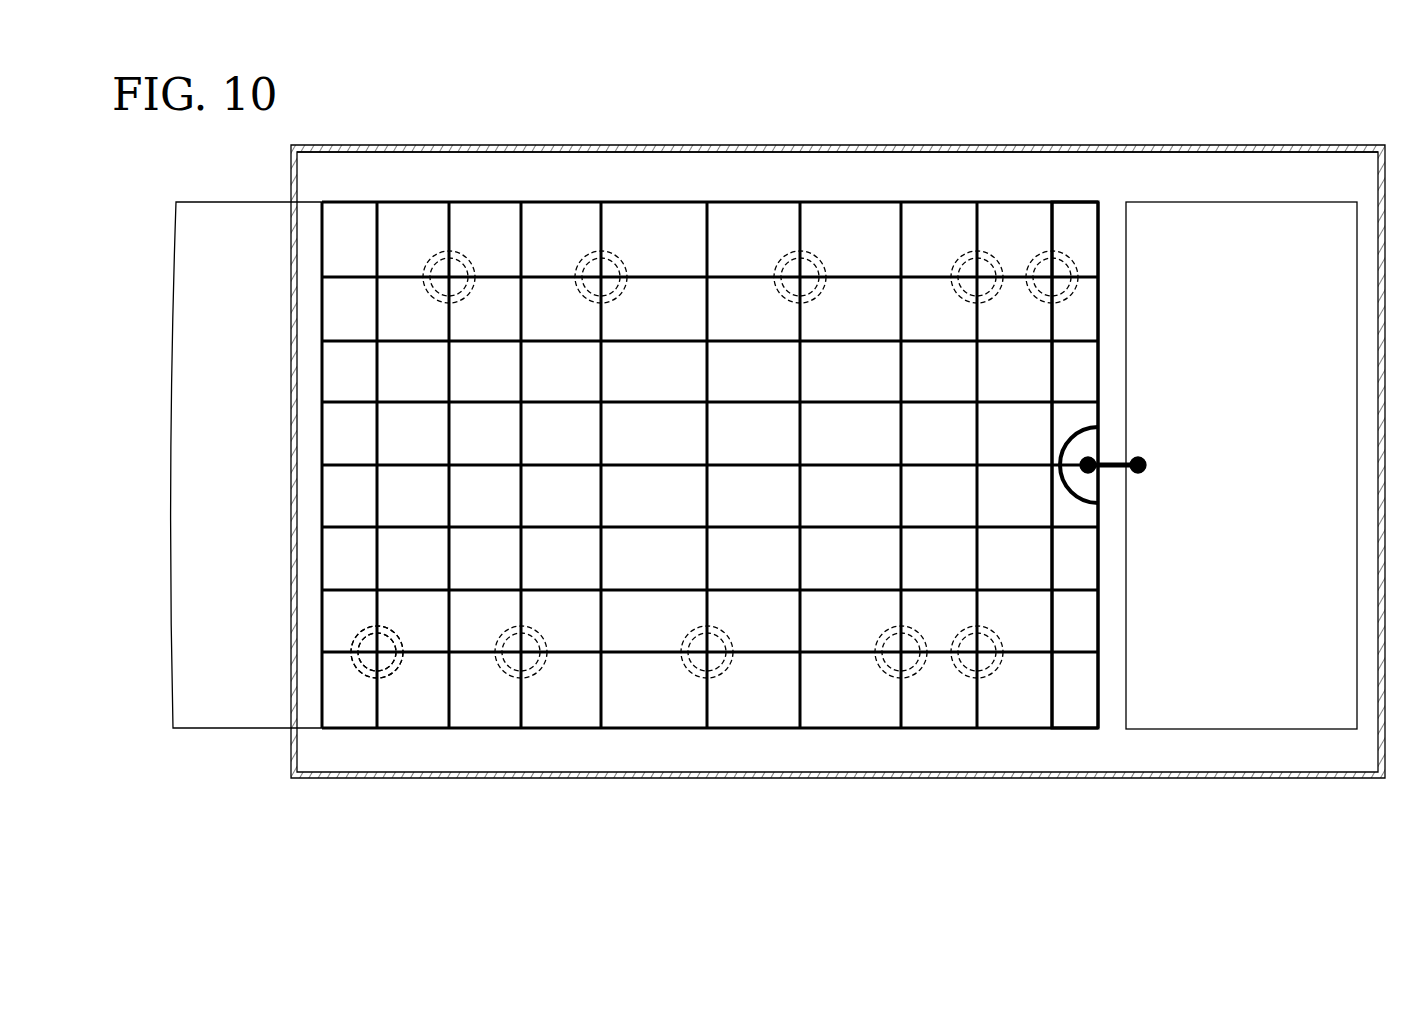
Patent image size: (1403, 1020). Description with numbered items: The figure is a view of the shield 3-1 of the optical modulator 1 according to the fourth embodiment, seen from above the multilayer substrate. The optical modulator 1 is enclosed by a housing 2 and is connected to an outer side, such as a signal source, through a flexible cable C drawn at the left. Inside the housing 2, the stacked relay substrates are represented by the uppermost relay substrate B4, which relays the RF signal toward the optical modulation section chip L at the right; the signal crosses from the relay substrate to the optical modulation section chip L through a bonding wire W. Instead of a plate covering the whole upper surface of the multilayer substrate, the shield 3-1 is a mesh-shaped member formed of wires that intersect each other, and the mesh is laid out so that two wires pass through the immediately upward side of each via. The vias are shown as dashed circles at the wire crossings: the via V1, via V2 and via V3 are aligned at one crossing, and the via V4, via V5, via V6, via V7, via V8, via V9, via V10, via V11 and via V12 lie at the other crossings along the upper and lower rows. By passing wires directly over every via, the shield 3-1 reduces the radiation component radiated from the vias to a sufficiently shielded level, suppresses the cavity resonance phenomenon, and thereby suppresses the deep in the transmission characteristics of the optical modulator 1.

The optical modulator 1 is at (922, 104).
The housing 2 is at (599, 145).
The relay substrate B4 is at (343, 220).
The flexible cable C is at (235, 720).
The optical modulation section chip L is at (1280, 200).
The shield 3-1 is at (1099, 290).
The bonding wire W is at (1110, 466).
The via V1 is at (392, 672).
The via V2 is at (377, 652).
The via V3 is at (377, 652).
The via V4 is at (455, 262).
The via V5 is at (540, 668).
The via V6 is at (612, 262).
The via V7 is at (725, 668).
The via V8 is at (808, 262).
The via V9 is at (920, 668).
The via V10 is at (988, 262).
The via V11 is at (995, 668).
The via V12 is at (1062, 262).